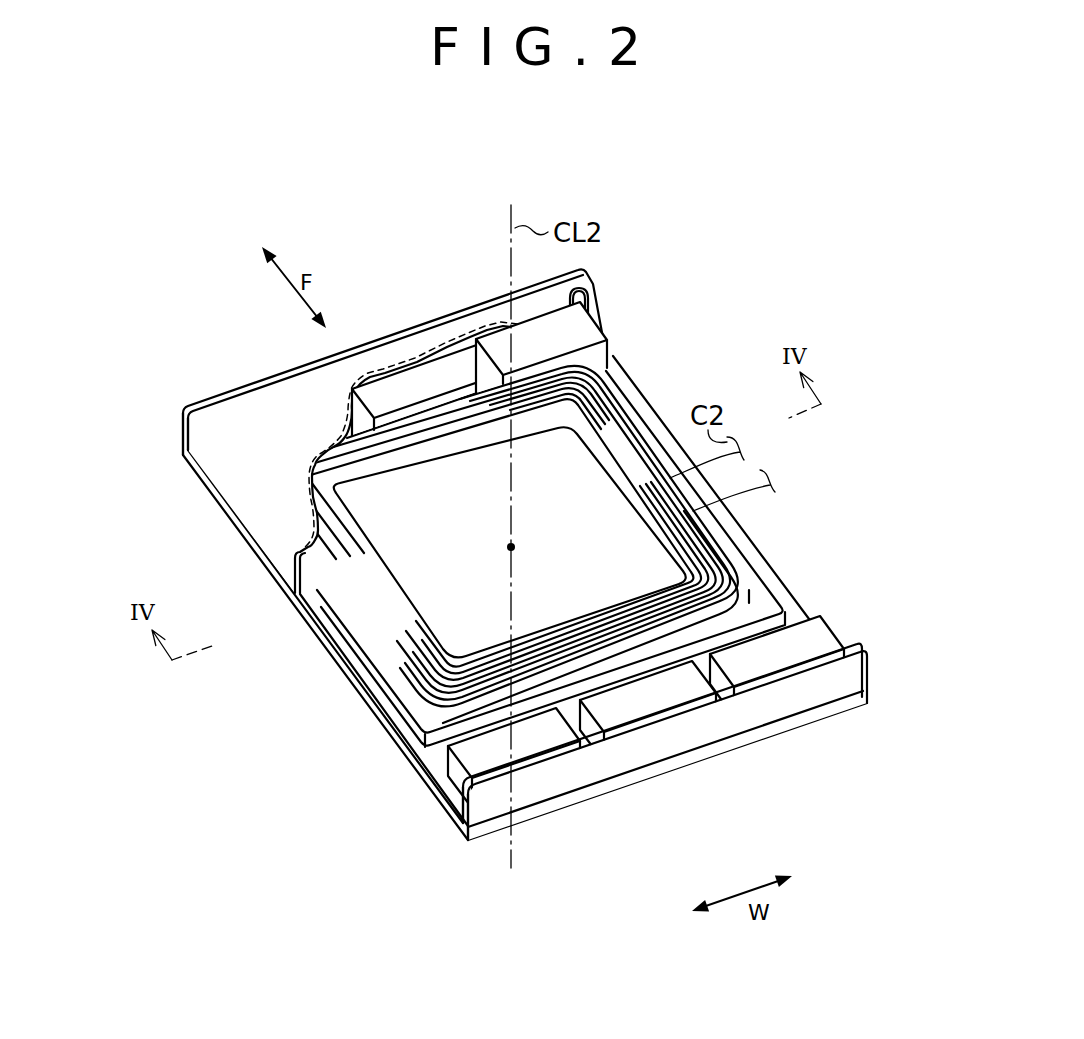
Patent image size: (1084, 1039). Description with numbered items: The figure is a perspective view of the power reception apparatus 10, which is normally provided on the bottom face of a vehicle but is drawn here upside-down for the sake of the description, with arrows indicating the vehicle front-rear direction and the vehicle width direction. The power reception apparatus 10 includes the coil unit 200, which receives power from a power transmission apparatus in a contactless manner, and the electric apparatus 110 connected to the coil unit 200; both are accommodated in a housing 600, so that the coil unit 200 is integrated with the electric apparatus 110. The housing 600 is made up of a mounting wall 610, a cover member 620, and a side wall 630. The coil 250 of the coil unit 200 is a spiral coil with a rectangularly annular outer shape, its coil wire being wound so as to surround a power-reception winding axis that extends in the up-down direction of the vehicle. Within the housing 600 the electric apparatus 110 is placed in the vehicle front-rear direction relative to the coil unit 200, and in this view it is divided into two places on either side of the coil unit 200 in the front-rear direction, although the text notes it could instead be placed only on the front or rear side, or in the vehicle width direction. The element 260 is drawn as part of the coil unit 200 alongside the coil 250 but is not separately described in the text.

The power reception apparatus 10 is at (522, 581).
The electric apparatus 110 is at (583, 333).
The coil unit 200 is at (529, 625).
The coil 250 is at (698, 640).
The magnetic plate 260 is at (627, 638).
The housing 600 is at (268, 463).
The mounting wall 610 is at (587, 793).
The cover member 620 is at (428, 340).
The side wall 630 is at (270, 374).